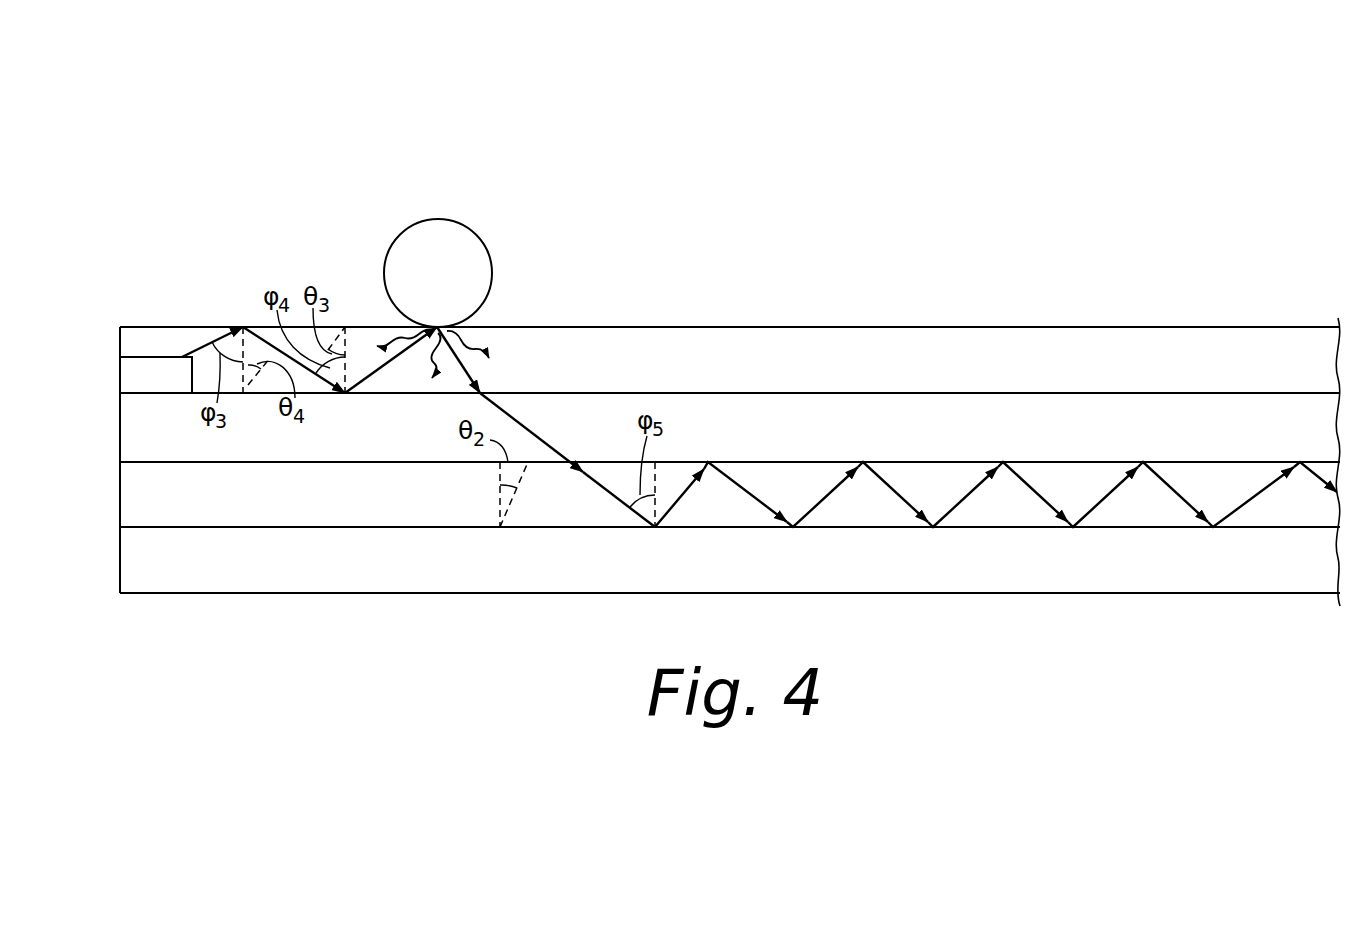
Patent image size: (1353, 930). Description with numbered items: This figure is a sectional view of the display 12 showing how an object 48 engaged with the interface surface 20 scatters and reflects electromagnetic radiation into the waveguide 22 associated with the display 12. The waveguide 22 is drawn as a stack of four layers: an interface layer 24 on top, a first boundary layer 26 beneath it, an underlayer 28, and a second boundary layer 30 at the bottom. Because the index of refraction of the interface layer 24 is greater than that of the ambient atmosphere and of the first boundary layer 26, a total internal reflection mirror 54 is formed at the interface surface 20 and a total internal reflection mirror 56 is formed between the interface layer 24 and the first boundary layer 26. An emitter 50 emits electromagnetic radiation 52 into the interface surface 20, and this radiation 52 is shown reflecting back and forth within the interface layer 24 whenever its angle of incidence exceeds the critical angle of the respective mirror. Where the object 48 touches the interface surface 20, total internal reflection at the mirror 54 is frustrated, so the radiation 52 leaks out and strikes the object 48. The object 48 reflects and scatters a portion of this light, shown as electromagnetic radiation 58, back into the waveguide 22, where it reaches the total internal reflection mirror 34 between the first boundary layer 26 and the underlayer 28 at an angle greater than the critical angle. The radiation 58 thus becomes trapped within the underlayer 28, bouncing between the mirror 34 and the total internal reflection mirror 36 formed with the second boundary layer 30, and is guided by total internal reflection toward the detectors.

The display 12 is at (802, 147).
The interface surface 20 is at (668, 327).
The waveguide 22 is at (873, 299).
The interface layer 24 is at (841, 357).
The first boundary layer 26 is at (155, 430).
The underlayer 28 is at (155, 493).
The second boundary layer 30 is at (155, 557).
The total internal reflection mirror 34 is at (217, 462).
The total internal reflection mirror 36 is at (300, 527).
The object 48 is at (443, 219).
The emitter 50 is at (142, 357).
The electromagnetic radiation 52 is at (264, 333).
The total internal reflection mirror 54 is at (1097, 327).
The total internal reflection mirror 56 is at (1114, 393).
The electromagnetic radiation 58 is at (468, 368).